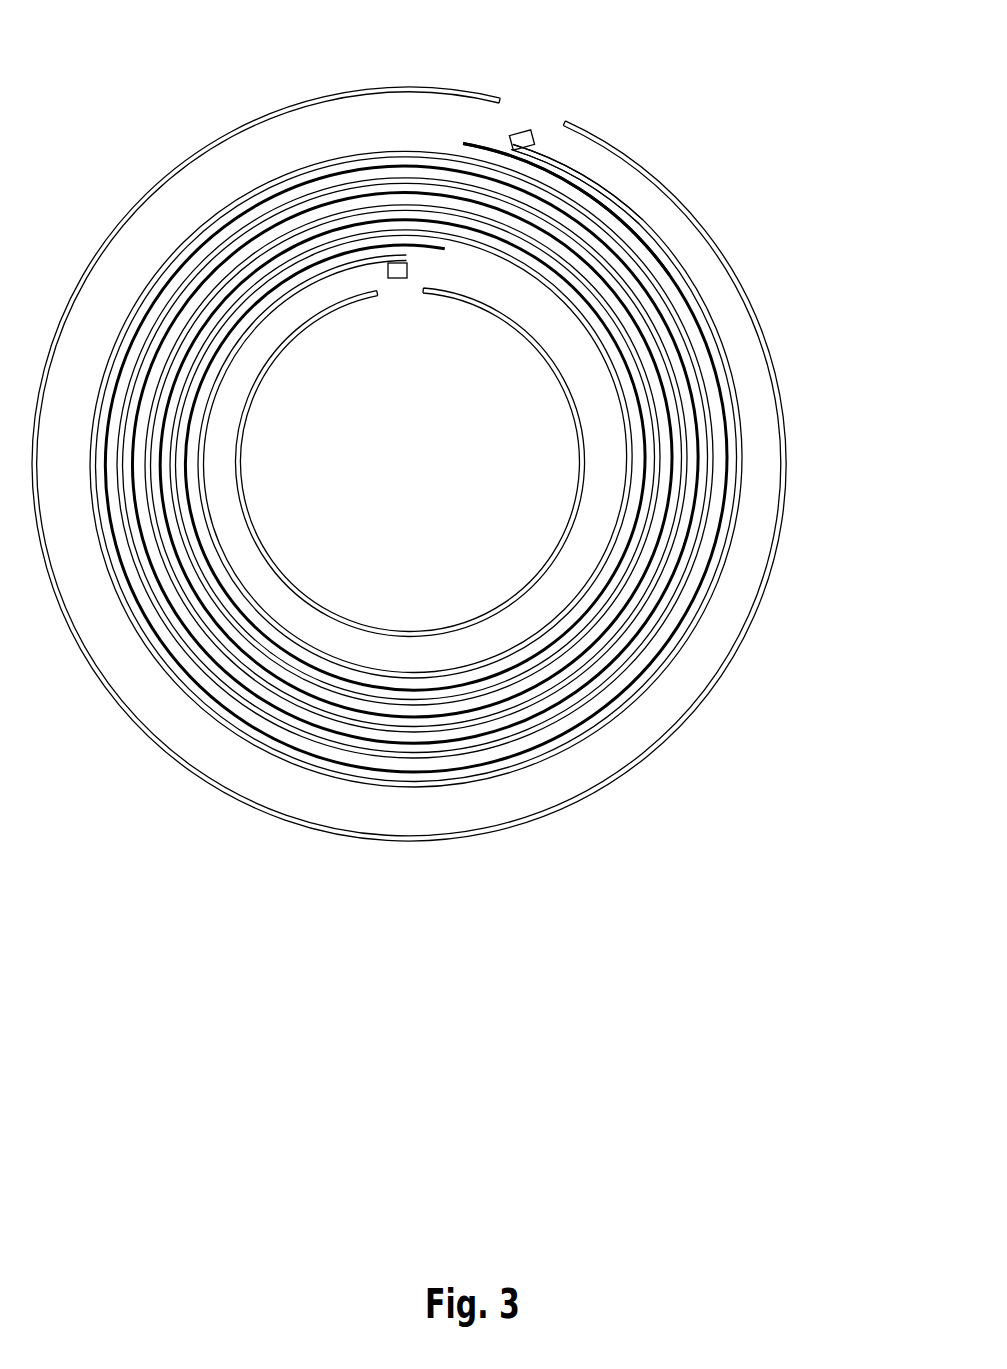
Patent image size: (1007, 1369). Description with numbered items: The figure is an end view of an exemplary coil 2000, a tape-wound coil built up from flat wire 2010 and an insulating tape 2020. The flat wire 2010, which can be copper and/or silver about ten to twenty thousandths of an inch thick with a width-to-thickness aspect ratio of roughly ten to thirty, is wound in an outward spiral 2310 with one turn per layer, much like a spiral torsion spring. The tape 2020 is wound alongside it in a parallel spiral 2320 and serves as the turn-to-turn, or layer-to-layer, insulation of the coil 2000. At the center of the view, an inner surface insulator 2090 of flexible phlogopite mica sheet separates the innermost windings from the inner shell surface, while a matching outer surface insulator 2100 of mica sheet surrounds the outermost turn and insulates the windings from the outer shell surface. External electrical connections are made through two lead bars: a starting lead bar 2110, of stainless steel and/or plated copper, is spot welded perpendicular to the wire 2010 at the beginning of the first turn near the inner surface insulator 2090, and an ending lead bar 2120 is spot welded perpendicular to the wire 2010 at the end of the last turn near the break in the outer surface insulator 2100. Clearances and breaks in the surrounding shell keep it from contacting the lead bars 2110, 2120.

The coil 2000 is at (119, 58).
The flat wire 2010 is at (617, 183).
The tape 2020 is at (481, 135).
The inner surface insulator 2090 is at (558, 406).
The outer surface insulator 2100 is at (715, 216).
The starting lead bar 2110 is at (398, 291).
The ending lead bar 2120 is at (535, 123).
The outward spiral 2310 is at (729, 333).
The parallel spiral 2320 is at (456, 134).